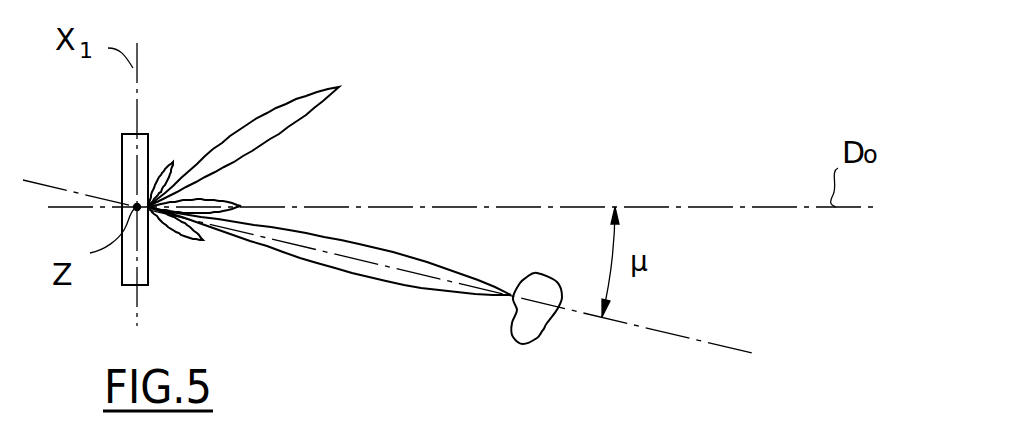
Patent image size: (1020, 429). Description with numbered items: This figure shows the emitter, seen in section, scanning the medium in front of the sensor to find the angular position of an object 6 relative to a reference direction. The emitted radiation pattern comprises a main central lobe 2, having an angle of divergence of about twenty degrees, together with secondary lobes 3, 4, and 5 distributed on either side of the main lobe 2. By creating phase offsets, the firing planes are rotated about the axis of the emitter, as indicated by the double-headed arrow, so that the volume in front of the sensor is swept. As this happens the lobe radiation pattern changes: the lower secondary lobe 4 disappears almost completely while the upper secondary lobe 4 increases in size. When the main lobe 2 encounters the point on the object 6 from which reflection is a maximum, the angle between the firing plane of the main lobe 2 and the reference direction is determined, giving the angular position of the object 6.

The main central lobe 2 is at (462, 272).
The secondary lobe 3 is at (243, 202).
The secondary lobe 4 is at (340, 86).
The secondary lobe 5 is at (177, 160).
The object 6 is at (537, 322).